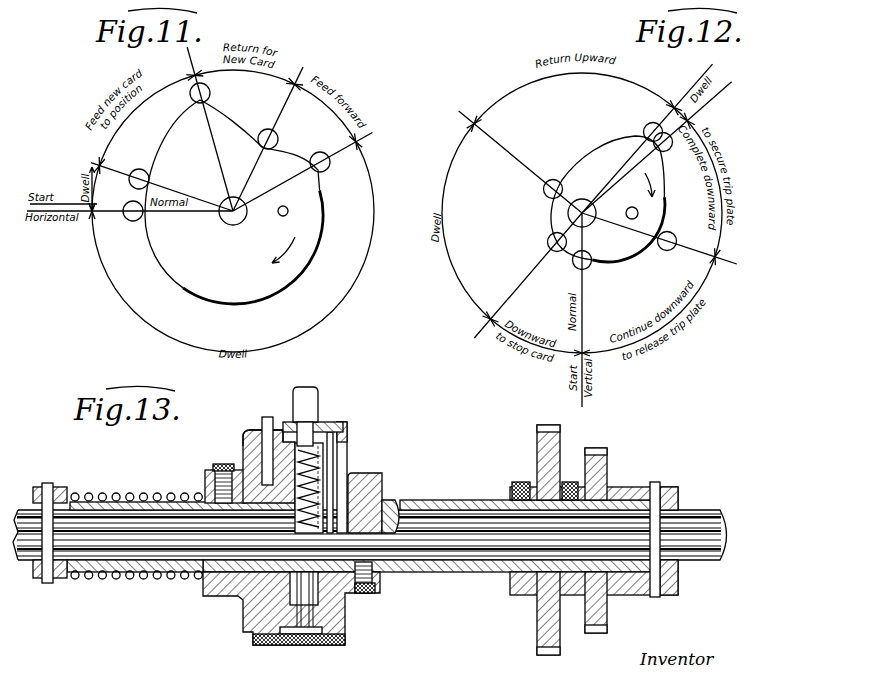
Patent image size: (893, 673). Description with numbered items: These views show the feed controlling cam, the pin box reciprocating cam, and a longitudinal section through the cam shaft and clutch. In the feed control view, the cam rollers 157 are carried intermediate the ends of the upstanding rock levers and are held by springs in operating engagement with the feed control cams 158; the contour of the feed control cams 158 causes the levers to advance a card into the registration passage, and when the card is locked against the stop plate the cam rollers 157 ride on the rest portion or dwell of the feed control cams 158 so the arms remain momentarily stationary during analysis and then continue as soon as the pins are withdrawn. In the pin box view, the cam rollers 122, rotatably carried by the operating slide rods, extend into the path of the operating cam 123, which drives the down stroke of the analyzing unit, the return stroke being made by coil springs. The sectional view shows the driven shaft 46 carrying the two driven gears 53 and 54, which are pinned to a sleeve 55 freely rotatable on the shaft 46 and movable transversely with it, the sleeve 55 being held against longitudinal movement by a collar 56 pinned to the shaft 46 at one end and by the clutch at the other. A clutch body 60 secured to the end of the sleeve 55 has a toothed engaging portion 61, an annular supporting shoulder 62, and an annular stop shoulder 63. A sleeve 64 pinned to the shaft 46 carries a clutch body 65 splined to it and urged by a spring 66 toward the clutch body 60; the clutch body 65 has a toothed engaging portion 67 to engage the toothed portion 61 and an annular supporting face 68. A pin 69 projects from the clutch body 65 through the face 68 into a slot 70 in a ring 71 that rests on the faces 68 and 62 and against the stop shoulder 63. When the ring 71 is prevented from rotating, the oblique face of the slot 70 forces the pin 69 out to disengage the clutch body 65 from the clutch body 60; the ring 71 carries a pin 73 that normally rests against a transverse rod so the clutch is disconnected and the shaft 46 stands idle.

In FIG. 11, the cam rollers 157 is at (331, 164).
In FIG. 11, the feed control cams 158 is at (234, 202).
In FIG. 12, the cam rollers 122 is at (651, 129).
In FIG. 12, the operating cam 123 is at (657, 201).
In FIG. 13, the shaft 46 is at (710, 521).
In FIG. 13, the driven gear 53 is at (540, 438).
In FIG. 13, the driven gear 54 is at (607, 463).
In FIG. 13, the sleeve 55 is at (453, 500).
In FIG. 13, the collar 56 is at (665, 487).
In FIG. 13, the clutch body 60 is at (364, 481).
In FIG. 13, the toothed engaging portion 61 is at (310, 463).
In FIG. 13, the annular supporting shoulder 62 is at (333, 432).
In FIG. 13, the annular stop shoulder 63 is at (347, 439).
In FIG. 13, the sleeve 64 is at (105, 577).
In FIG. 13, the clutch body 65 is at (242, 441).
In FIG. 13, the spring 66 is at (165, 573).
In FIG. 13, the toothed engaging portion 67 is at (292, 639).
In FIG. 13, the annular supporting face 68 is at (248, 636).
In FIG. 13, the pin 69 is at (267, 416).
In FIG. 13, the slot 70 is at (258, 424).
In FIG. 13, the ring 71 is at (322, 422).
In FIG. 13, the pin 73 is at (312, 386).